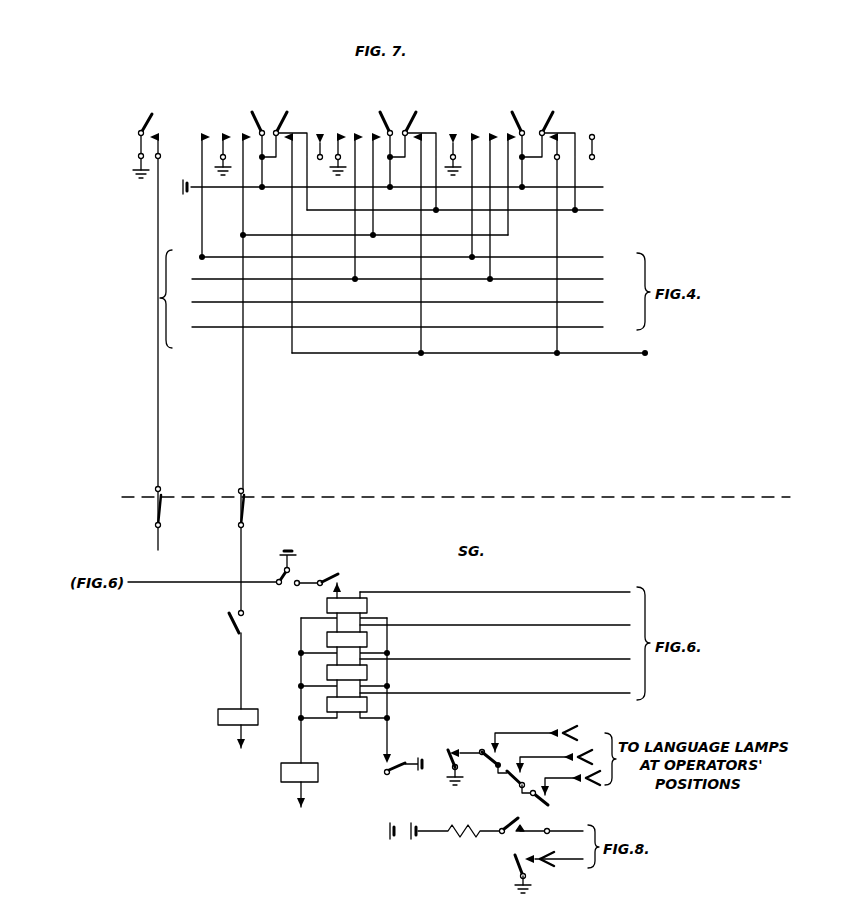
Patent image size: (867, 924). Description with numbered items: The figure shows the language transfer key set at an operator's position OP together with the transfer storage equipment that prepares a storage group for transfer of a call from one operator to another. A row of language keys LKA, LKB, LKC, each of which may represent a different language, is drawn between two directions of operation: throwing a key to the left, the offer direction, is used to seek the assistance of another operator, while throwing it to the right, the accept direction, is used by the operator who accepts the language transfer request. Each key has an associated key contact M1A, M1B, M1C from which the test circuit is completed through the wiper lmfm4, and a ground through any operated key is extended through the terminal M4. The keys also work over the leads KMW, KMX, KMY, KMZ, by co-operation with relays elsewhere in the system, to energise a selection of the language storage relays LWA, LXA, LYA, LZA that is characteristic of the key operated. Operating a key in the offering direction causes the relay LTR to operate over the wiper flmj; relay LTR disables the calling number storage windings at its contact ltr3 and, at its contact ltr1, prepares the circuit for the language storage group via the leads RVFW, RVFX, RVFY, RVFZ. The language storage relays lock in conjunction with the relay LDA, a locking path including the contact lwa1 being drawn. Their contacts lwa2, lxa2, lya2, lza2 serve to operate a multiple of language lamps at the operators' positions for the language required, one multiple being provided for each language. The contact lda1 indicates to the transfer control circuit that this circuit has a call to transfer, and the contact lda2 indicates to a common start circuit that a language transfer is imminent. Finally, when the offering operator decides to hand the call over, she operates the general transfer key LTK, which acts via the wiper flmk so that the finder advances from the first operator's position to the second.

The general transfer key LTK is at (144, 293).
The offering direction offer is at (250, 105).
The language key LKA is at (279, 220).
The accept direction accept is at (360, 105).
The key contact M1A is at (333, 126).
The language key LKB is at (432, 106).
The key contact M1B is at (458, 136).
The language key LKC is at (561, 106).
The key contact M1C is at (615, 148).
The wiper lmfm4 is at (603, 210).
The lead to relay KMW is at (390, 263).
The lead to relay KMX is at (390, 285).
The lead to relay KMY is at (390, 310).
The lead to relay KMZ is at (390, 335).
The operator's position OP is at (631, 291).
The terminal M4 is at (495, 365).
The wiper flmk is at (179, 519).
The wiper flmj is at (254, 599).
The contact of relay LTR ltr3 is at (224, 578).
The contact of relay LWA lwa1 is at (341, 579).
The language storage relay LWA is at (368, 605).
The language storage relay LXA is at (368, 641).
The language storage relay LYA is at (368, 674).
The language storage relay LZA is at (368, 706).
The lead RVFW is at (495, 583).
The lead RVFX is at (495, 617).
The lead RVFY is at (495, 651).
The lead RVFZ is at (495, 685).
The relay LTR is at (216, 728).
The relay LDA is at (299, 785).
The contact of relay LTR ltr1 is at (398, 776).
The contact of relay LWA lwa2 is at (466, 761).
The contact of relay LXA lxa2 is at (534, 757).
The contact of relay LYA lya2 is at (554, 777).
The contact of relay LZA lza2 is at (570, 788).
The contact of relay LDA lda1 is at (486, 822).
The contact of relay LDA lda2 is at (522, 872).